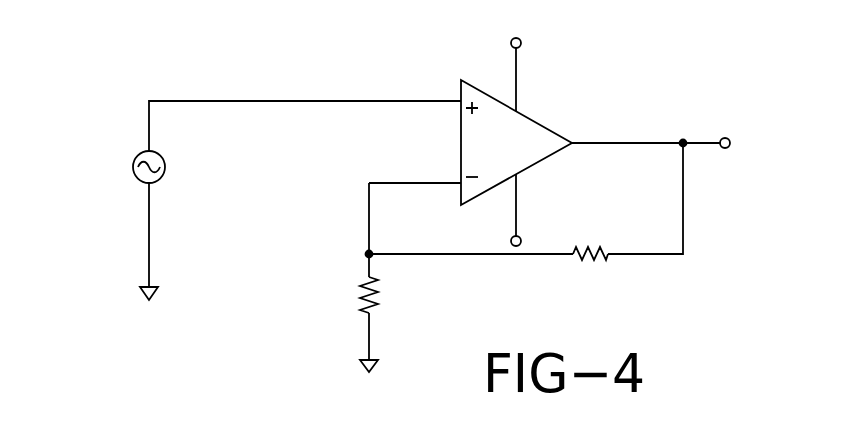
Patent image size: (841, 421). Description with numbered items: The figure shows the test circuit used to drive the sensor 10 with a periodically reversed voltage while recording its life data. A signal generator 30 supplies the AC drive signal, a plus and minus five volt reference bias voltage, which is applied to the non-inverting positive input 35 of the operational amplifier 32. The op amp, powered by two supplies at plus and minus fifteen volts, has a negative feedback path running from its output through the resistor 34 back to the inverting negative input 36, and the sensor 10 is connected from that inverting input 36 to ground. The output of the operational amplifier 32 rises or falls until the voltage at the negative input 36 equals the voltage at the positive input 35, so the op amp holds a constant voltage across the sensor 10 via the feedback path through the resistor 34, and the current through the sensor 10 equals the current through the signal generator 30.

The signal generator 30 is at (133, 163).
The operational amplifier 32 is at (460, 152).
The non-inverting op amp positive input 35 is at (460, 101).
The inverting input 36 is at (458, 183).
The sensor 10 is at (366, 283).
The resistor 34 is at (594, 260).